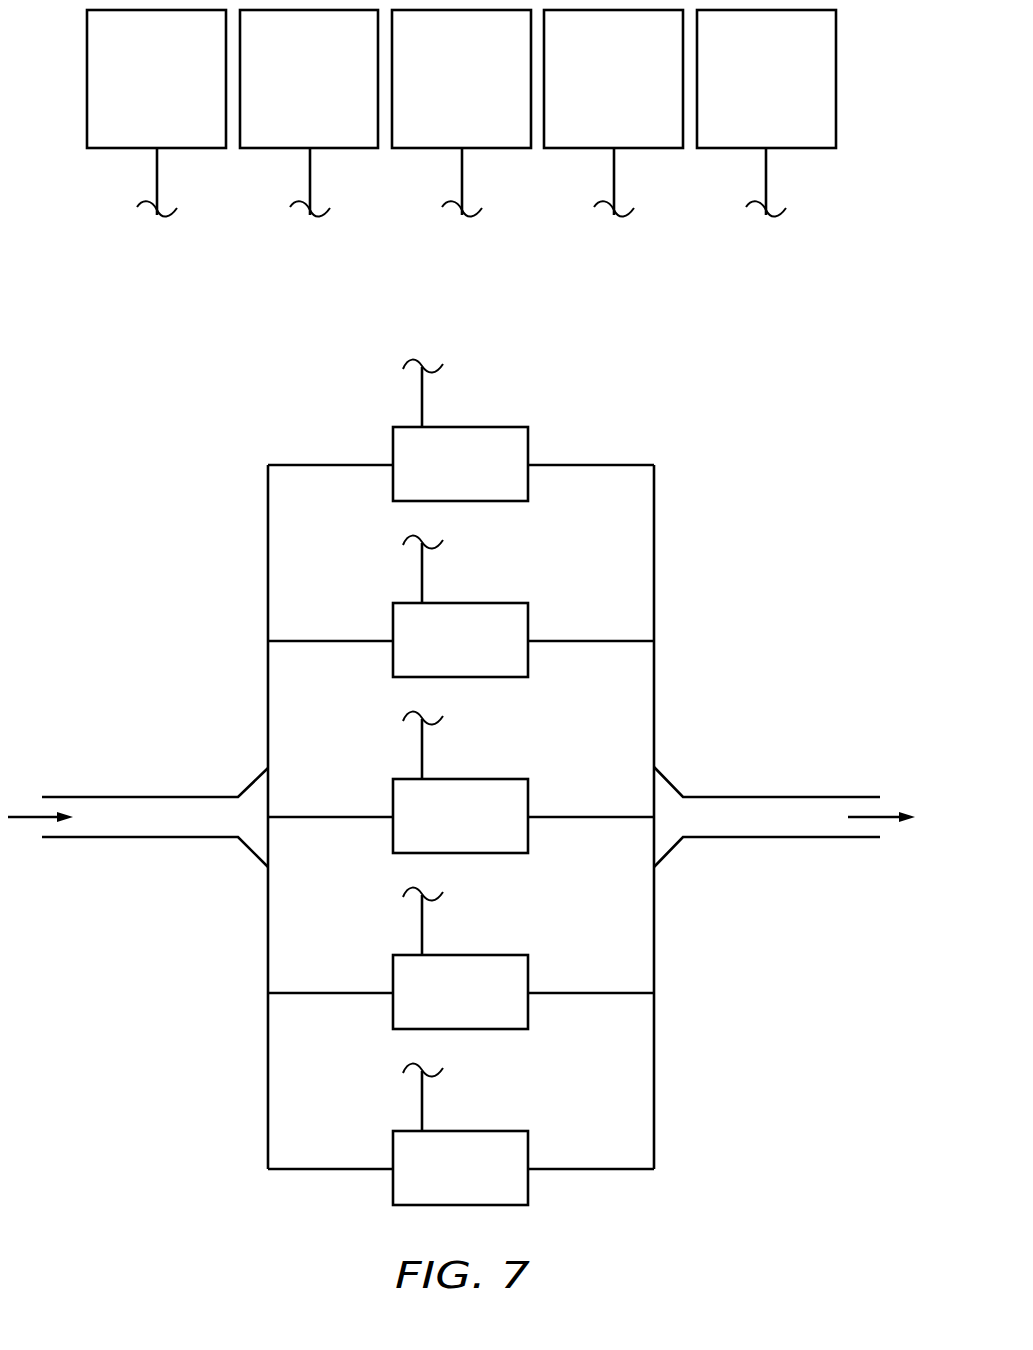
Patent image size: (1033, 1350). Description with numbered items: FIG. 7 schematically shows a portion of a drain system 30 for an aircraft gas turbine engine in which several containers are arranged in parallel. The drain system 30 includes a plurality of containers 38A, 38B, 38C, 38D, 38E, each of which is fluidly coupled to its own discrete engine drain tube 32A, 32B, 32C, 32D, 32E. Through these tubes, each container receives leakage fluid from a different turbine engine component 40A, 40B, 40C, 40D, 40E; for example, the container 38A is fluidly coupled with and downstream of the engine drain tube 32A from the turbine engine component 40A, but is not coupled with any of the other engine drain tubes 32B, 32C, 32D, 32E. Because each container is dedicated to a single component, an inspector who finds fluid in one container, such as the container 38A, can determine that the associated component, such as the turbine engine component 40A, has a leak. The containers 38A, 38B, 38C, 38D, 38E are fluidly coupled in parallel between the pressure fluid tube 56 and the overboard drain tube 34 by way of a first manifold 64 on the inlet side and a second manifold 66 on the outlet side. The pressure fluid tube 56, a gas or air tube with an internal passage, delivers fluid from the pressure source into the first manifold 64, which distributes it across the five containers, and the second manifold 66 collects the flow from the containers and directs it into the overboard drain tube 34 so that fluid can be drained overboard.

The drain system 30 is at (797, 338).
The engine drain tube 32A is at (157, 173).
The engine drain tube 32B is at (310, 173).
The engine drain tube 32C is at (462, 173).
The engine drain tube 32D is at (614, 173).
The engine drain tube 32E is at (766, 173).
The overboard drain tube 34 is at (792, 797).
The container 38A is at (528, 447).
The container 38B is at (528, 623).
The container 38C is at (528, 799).
The container 38D is at (528, 975).
The container 38E is at (528, 1151).
The turbine engine component 40A is at (131, 93).
The turbine engine component 40B is at (284, 93).
The turbine engine component 40C is at (436, 93).
The turbine engine component 40D is at (588, 93).
The turbine engine component 40E is at (741, 93).
The pressure fluid tube 56 is at (131, 838).
The first manifold 64 is at (268, 465).
The second manifold 66 is at (654, 465).